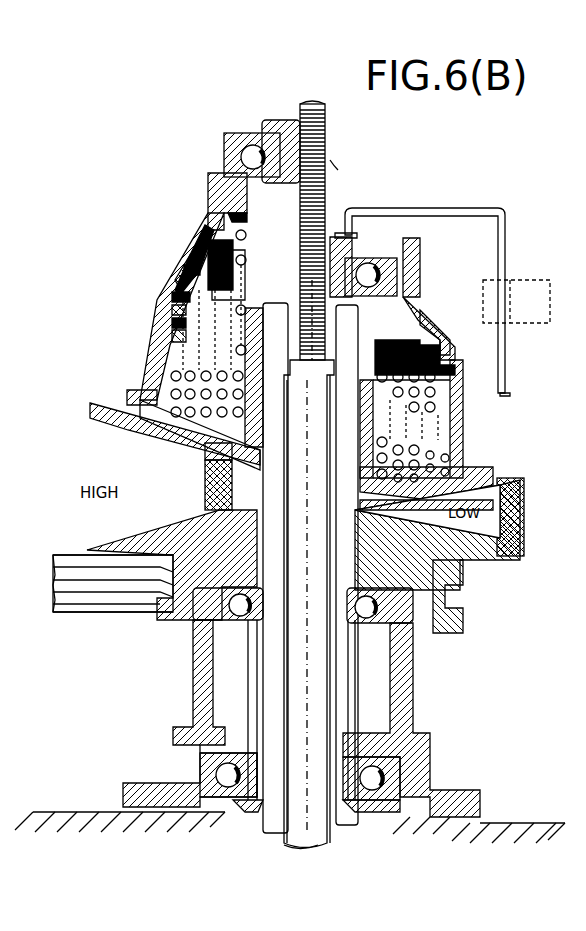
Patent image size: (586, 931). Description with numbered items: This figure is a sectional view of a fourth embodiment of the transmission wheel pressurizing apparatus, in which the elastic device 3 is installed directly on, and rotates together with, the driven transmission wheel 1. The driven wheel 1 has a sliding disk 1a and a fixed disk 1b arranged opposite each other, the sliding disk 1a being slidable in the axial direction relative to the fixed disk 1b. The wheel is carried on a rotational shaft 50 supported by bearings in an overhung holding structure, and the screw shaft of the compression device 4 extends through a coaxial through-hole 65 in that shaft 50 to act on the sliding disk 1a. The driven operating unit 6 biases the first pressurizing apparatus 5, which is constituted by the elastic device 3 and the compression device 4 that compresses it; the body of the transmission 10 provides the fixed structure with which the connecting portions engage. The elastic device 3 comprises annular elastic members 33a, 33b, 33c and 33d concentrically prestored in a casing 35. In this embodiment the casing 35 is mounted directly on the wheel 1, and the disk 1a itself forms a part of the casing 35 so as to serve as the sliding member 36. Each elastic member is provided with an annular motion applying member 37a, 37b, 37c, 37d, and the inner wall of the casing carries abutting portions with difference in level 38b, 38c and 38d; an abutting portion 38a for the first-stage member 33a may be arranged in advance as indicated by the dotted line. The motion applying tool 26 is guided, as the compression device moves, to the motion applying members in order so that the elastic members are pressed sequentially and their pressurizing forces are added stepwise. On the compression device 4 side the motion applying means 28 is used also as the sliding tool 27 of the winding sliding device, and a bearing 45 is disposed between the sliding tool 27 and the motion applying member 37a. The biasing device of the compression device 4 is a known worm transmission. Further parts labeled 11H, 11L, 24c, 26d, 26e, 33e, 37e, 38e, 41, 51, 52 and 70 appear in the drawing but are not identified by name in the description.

The driven transmission wheel 1 is at (95, 462).
The sliding disk 1a is at (102, 420).
The fixed disk 1b is at (108, 545).
The elastic device 3 is at (436, 260).
The compression device 4 is at (398, 188).
The first pressurizing apparatus 5 is at (522, 205).
The driven operating unit 6 is at (153, 195).
The transmission 10 is at (200, 695).
The high-speed gear 11H is at (205, 492).
The low-speed gear 11L is at (525, 532).
The lever end 24c is at (505, 378).
The motion applying tool 26 is at (330, 685).
The shaft shoulder 26d is at (326, 160).
The shaft sleeve 26e is at (250, 655).
The sliding tool 27 is at (322, 128).
The motion applying means 28 is at (280, 120).
The first-stage elastic member 33a is at (246, 291).
The elastic member 33b is at (185, 430).
The elastic member 33c is at (150, 418).
The elastic member 33d is at (172, 378).
The spring 33e is at (173, 366).
The casing 35 is at (458, 417).
The sliding member 36 is at (205, 440).
The motion applying member 37a is at (214, 184).
The motion applying member 37b is at (212, 236).
The motion applying member 37c is at (183, 278).
The motion applying member 37d is at (172, 310).
The clutch plate 37e is at (172, 336).
The abutting portion 38a is at (240, 220).
The abutting portion with difference in level 38b is at (215, 222).
The abutting portion with difference in level 38c is at (190, 262).
The abutting portion with difference in level 38d is at (174, 296).
The friction disc 38e is at (172, 322).
The bearing 41 is at (175, 622).
The bearing 45 is at (253, 150).
The rotational shaft 50 is at (345, 716).
The bearing 51 is at (400, 625).
The bearing 52 is at (385, 780).
The through-hole 65 is at (284, 832).
The pulley groove 70 is at (72, 557).